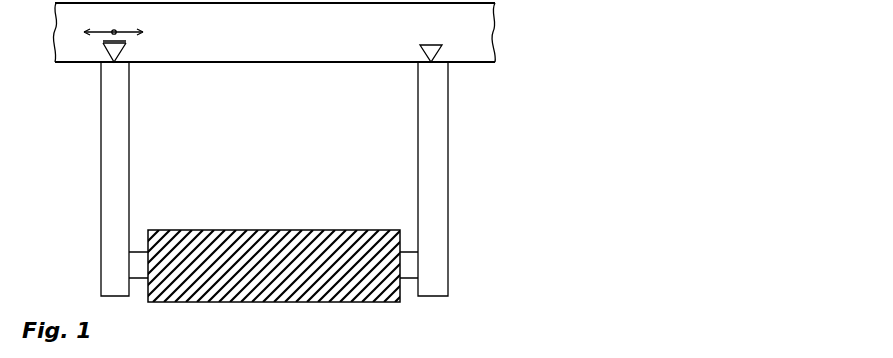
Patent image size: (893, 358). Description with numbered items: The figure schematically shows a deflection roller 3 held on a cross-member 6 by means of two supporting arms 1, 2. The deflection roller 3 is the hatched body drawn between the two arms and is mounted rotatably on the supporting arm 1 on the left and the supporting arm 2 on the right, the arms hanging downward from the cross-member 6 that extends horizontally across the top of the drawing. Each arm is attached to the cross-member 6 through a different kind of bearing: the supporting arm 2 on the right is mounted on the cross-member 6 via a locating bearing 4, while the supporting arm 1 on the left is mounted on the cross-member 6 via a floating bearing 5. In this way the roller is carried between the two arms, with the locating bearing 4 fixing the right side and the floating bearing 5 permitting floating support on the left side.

The supporting arm 1 is at (110, 175).
The supporting arm 2 is at (437, 170).
The deflection roller 3 is at (270, 230).
The locating bearing 4 is at (445, 51).
The floating bearing 5 is at (140, 48).
The cross-member 6 is at (475, 19).